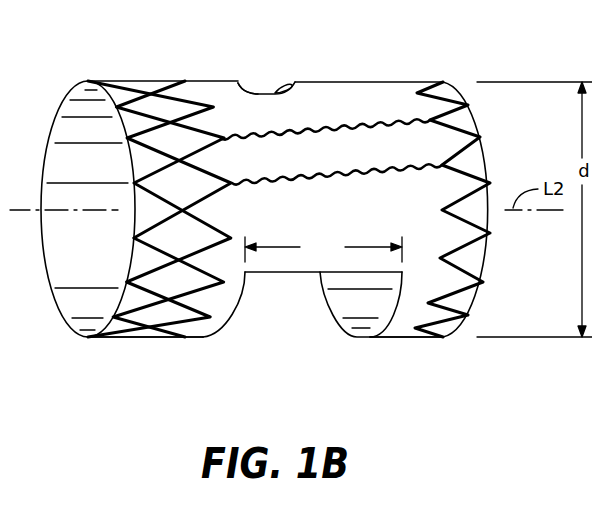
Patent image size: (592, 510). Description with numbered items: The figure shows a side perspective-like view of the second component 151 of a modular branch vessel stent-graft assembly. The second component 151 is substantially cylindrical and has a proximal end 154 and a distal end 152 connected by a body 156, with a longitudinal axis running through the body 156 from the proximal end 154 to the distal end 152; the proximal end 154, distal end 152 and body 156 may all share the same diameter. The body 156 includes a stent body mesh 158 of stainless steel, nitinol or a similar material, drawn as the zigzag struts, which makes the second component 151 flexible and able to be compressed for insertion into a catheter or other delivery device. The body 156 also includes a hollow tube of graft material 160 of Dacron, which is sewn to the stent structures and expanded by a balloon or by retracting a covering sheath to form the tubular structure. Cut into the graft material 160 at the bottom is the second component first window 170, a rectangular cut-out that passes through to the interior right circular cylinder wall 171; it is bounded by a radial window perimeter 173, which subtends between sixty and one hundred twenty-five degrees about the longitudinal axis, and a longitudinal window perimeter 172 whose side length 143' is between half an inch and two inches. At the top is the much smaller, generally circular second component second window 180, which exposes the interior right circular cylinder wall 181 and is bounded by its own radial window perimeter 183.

The second component 151 is at (383, 339).
The distal end 152 is at (442, 340).
The proximal end 154 is at (78, 307).
The body 156 is at (417, 93).
The stent body mesh 158 is at (160, 93).
The hollow tube of graft material 160 is at (167, 315).
The second component first window 170 is at (283, 289).
The interior right circular cylinder wall 171 is at (318, 293).
The longitudinal window perimeter 172 is at (266, 272).
The radial window perimeter 173 is at (233, 325).
The second component second window 180 is at (270, 85).
The interior right circular cylinder wall 181 is at (290, 80).
The radial window perimeter 183 is at (257, 90).
The side length 143' is at (323, 248).